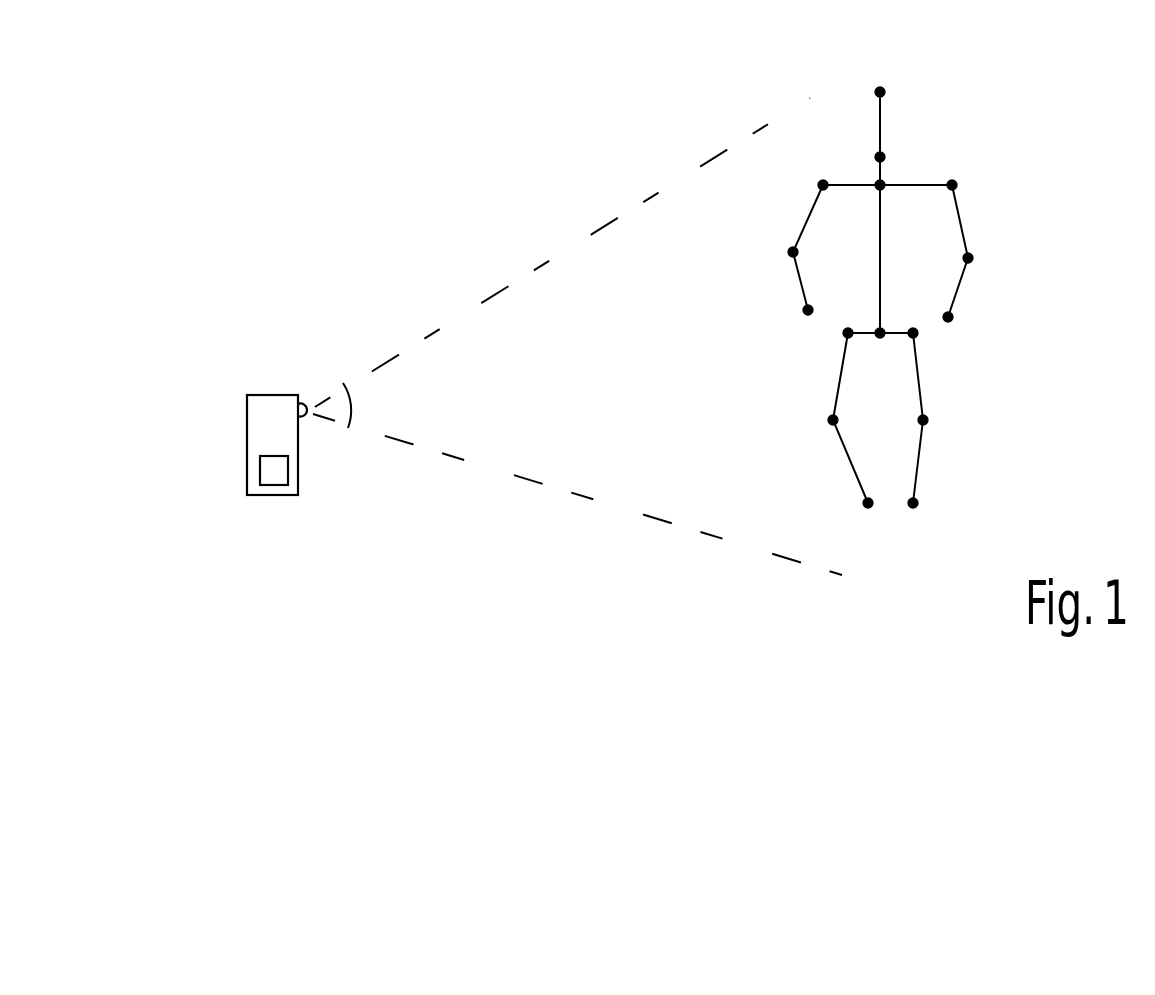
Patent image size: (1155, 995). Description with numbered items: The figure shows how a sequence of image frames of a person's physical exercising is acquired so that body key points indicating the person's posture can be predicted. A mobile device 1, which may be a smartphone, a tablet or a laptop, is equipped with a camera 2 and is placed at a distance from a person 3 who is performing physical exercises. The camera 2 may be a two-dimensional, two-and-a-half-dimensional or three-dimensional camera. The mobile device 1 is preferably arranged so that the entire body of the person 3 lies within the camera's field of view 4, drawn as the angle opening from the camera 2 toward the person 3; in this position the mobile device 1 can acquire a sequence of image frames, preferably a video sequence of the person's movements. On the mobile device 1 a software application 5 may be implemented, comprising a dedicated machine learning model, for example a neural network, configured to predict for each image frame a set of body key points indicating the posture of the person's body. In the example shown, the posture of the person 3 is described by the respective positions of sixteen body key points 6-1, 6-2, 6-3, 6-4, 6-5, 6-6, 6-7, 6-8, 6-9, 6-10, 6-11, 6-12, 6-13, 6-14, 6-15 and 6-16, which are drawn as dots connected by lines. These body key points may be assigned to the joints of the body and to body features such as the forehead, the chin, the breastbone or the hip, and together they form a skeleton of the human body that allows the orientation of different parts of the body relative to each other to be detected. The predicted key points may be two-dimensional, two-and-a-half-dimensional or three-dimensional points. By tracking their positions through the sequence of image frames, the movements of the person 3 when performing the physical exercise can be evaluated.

The mobile device 1 is at (250, 409).
The camera 2 is at (306, 399).
The person 3 is at (919, 286).
The field of view 4 is at (356, 405).
The software application 5 is at (274, 478).
The body key point 6-1 is at (884, 90).
The body key point 6-2 is at (884, 156).
The body key point 6-3 is at (883, 188).
The body key point 6-4 is at (956, 185).
The body key point 6-5 is at (820, 182).
The body key point 6-6 is at (972, 258).
The body key point 6-7 is at (789, 251).
The body key point 6-8 is at (952, 318).
The body key point 6-9 is at (804, 310).
The body key point 6-10 is at (880, 337).
The body key point 6-11 is at (913, 329).
The body key point 6-12 is at (848, 329).
The body key point 6-13 is at (927, 419).
The body key point 6-14 is at (829, 419).
The body key point 6-15 is at (917, 504).
The body key point 6-16 is at (864, 504).